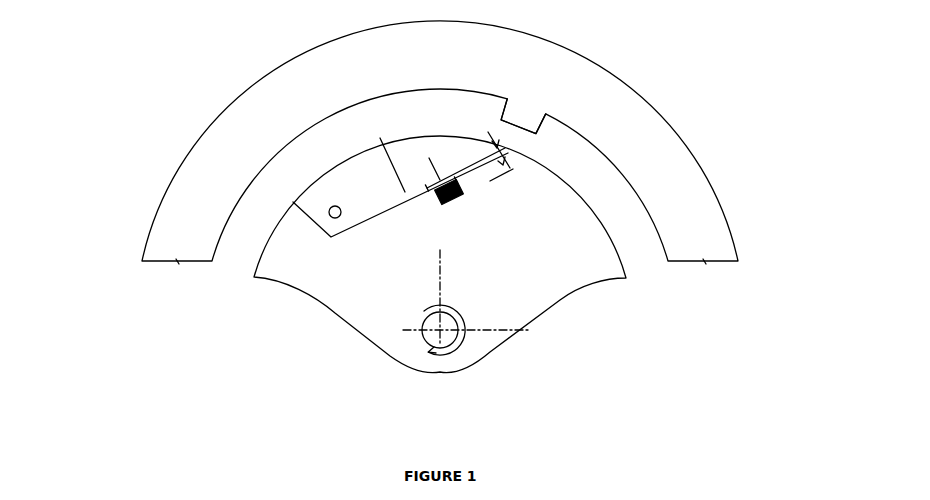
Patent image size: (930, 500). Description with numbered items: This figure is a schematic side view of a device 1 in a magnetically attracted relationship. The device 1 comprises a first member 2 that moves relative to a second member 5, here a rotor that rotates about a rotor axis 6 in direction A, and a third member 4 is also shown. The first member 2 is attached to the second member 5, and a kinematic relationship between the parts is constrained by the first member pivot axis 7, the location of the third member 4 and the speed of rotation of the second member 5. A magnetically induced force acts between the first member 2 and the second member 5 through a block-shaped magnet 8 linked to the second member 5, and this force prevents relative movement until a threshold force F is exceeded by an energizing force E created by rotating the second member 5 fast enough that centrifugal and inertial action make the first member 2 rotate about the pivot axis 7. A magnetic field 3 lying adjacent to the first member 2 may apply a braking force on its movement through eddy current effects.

The device 1 is at (441, 217).
The first member 2 is at (338, 180).
The magnetic field 3 is at (208, 152).
The third member 4 is at (532, 115).
The second member 5 is at (560, 268).
The rotor axis 6 is at (441, 332).
The first member pivot axis 7 is at (331, 217).
The magnet 8 is at (460, 198).